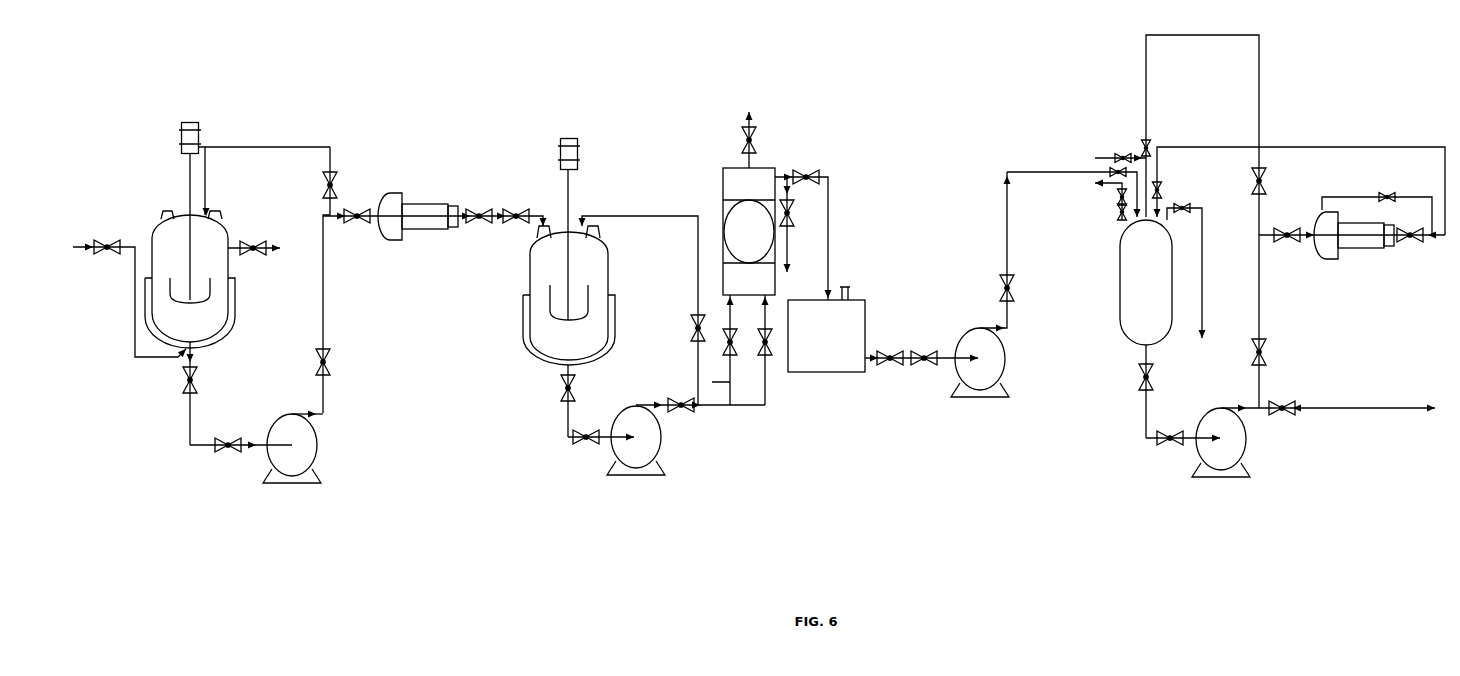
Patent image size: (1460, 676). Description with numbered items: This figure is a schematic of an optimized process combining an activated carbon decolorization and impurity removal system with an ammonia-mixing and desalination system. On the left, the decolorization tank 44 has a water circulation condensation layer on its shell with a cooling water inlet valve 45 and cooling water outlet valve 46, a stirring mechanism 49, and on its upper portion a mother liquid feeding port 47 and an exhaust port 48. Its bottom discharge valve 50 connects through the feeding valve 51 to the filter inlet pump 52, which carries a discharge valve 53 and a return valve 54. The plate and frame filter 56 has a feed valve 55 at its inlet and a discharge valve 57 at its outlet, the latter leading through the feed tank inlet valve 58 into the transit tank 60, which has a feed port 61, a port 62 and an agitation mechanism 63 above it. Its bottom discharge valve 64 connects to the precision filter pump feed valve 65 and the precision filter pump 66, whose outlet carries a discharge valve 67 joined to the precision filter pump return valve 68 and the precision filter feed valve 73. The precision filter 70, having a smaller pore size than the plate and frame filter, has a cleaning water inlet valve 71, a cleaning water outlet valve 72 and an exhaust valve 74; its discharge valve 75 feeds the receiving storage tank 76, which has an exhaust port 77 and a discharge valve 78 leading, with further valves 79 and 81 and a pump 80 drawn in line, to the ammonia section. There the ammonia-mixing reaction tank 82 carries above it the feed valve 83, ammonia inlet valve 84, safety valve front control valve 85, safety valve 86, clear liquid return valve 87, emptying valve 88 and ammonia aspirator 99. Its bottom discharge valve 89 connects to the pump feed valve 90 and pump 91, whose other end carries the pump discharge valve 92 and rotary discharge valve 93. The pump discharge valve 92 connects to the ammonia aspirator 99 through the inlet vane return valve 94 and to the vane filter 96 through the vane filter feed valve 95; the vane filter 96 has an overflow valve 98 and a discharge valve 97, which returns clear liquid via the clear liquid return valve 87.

The decolorization tank 44 is at (222, 310).
The cooling water inlet valve 45 is at (108, 241).
The cooling water outlet valve 46 is at (257, 245).
The mother liquid feeding port 47 is at (166, 211).
The exhaust port 48 is at (220, 211).
The stirring mechanism 49 is at (182, 122).
The discharge valve 50 is at (195, 380).
The feeding valve 51 is at (225, 452).
The filter inlet pump 52 is at (303, 448).
The discharge valve 53 is at (328, 362).
The return valve 54 is at (336, 182).
The feed valve 55 is at (360, 222).
The plate and frame filter 56 is at (414, 205).
The discharge valve 57 is at (477, 210).
The feed tank inlet valve 58 is at (515, 210).
The transit tank 60 is at (535, 333).
The feed port 61 is at (537, 233).
The port 62 is at (597, 224).
The agitation mechanism 63 is at (560, 150).
The bottom discharge valve 64 is at (565, 390).
The precision filter pump feed valve 65 is at (582, 442).
The precision filter pump 66 is at (655, 462).
The discharge valve 67 is at (685, 410).
The precision filter pump return valve 68 is at (693, 330).
The precision filter 70 is at (730, 195).
The cleaning water inlet valve 71 is at (743, 140).
The cleaning water outlet valve 72 is at (732, 348).
The precision filter feed valve 73 is at (769, 350).
The exhaust valve 74 is at (792, 213).
The discharge valve 75 is at (812, 172).
The receiving storage tank 76 is at (825, 350).
The exhaust port 77 is at (852, 287).
The discharge valve 78 is at (891, 352).
The valve 79 is at (926, 352).
The transfer pump 80 is at (1002, 358).
The valve 81 is at (1012, 288).
The ammonia-mixing reaction tank 82 is at (1140, 322).
The feed valve 83 is at (1112, 171).
The ammonia inlet valve 84 is at (1120, 155).
The safety valve front control valve 85 is at (1117, 200).
The safety valve 86 is at (1119, 216).
The clear liquid return valve 87 is at (1162, 188).
The emptying valve 88 is at (1186, 207).
The discharge valve 89 is at (1141, 378).
The pump feed valve 90 is at (1168, 441).
The pump 91 is at (1242, 450).
The pump discharge valve 92 is at (1264, 352).
The rotary discharge valve 93 is at (1286, 413).
The inlet vane return valve 94 is at (1264, 180).
The vane filter feed valve 95 is at (1289, 241).
The vane filter 96 is at (1352, 248).
The discharge valve 97 is at (1412, 241).
The overflow valve 98 is at (1388, 193).
The ammonia aspirator 99 is at (1149, 142).